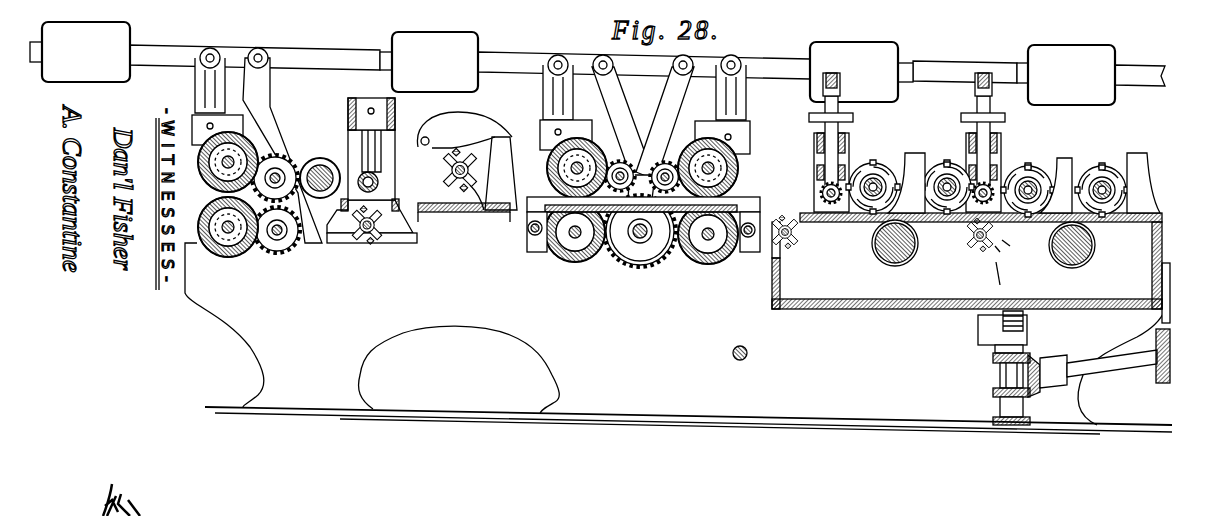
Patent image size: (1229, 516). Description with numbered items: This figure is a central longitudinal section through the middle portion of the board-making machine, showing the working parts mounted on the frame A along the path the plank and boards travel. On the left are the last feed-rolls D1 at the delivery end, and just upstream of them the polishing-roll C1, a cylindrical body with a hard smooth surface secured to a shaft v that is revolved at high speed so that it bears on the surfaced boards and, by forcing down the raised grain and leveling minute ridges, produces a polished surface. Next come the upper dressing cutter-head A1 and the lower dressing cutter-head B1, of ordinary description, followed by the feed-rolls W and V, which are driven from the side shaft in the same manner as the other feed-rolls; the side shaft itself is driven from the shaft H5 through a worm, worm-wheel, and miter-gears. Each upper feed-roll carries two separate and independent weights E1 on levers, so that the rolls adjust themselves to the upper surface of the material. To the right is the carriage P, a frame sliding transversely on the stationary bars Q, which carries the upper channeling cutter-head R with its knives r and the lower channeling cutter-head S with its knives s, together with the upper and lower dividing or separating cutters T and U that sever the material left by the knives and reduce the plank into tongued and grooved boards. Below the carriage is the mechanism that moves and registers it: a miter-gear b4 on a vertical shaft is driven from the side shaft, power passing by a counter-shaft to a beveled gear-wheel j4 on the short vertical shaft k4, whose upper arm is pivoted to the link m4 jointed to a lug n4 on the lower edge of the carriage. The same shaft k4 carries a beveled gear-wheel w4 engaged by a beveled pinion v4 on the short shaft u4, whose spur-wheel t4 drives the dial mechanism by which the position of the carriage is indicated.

The weights E1 is at (597, 63).
The last feed-rolls D1 is at (206, 210).
The polishing-roll C1 is at (303, 164).
The shaft v is at (340, 253).
The lower dressing cutter-head B1 is at (380, 243).
The upper dressing cutter-head A1 is at (442, 173).
The feed-roll W is at (548, 196).
The feed-roll V is at (740, 197).
The bearing D is at (536, 254).
The frame A is at (678, 338).
The shaft H5 is at (748, 358).
The lower dividing or separating cutter U is at (790, 245).
The stationary bars Q is at (876, 250).
The upper dividing or separating cutter T is at (835, 142).
The knives r is at (942, 170).
The upper channeling cutter-head R is at (953, 172).
The carriage P is at (977, 254).
The knives s is at (999, 261).
The lower channeling cutter-head S is at (1012, 248).
The lug n4 is at (998, 279).
The link m4 is at (977, 320).
The miter-gear b4 is at (1025, 340).
The beveled pinion v4 is at (1038, 361).
The beveled gear-wheel w4 is at (992, 357).
The beveled gear-wheel j4 is at (996, 392).
The short vertical shaft k4 is at (1030, 407).
The short shaft u4 is at (1115, 362).
The spur-wheel t4 is at (1171, 358).